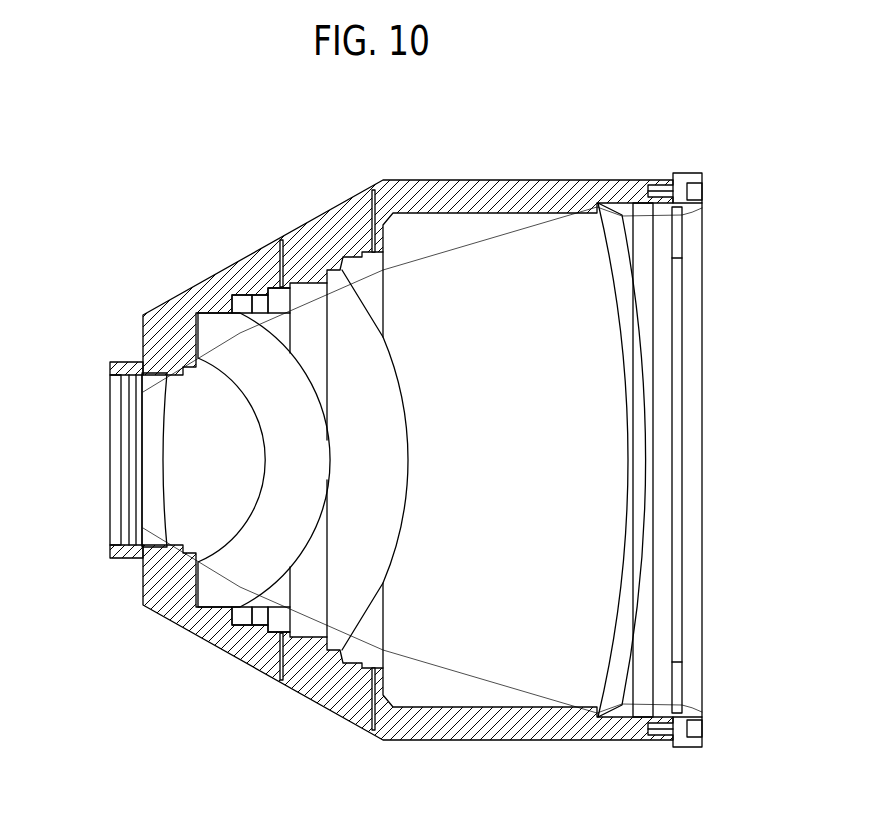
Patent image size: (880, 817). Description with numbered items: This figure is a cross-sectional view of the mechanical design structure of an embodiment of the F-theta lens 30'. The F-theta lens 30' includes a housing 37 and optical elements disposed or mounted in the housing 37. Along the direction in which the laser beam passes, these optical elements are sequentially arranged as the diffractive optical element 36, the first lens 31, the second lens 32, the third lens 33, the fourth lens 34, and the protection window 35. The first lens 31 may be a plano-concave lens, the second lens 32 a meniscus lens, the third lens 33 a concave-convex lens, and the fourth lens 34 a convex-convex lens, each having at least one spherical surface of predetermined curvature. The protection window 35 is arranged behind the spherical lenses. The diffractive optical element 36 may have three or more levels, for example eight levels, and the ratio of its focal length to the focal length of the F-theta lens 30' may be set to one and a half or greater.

The F-theta lens 30' is at (399, 402).
The first lens 31 is at (148, 445).
The second lens 32 is at (250, 543).
The third lens 33 is at (345, 302).
The fourth lens 34 is at (602, 278).
The protection window 35 is at (682, 267).
The diffractive optical element 36 is at (120, 427).
The housing 37 is at (178, 300).